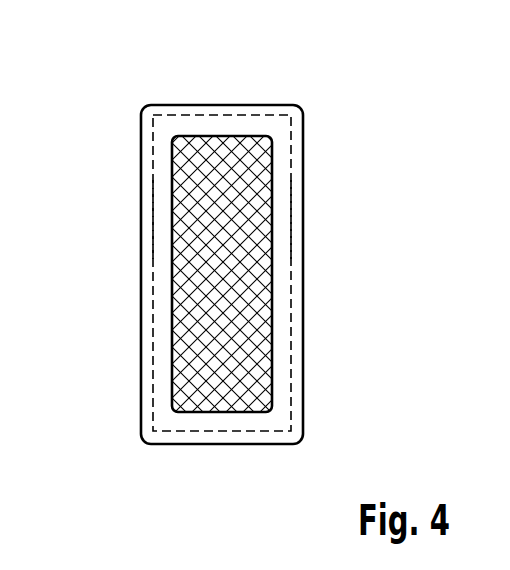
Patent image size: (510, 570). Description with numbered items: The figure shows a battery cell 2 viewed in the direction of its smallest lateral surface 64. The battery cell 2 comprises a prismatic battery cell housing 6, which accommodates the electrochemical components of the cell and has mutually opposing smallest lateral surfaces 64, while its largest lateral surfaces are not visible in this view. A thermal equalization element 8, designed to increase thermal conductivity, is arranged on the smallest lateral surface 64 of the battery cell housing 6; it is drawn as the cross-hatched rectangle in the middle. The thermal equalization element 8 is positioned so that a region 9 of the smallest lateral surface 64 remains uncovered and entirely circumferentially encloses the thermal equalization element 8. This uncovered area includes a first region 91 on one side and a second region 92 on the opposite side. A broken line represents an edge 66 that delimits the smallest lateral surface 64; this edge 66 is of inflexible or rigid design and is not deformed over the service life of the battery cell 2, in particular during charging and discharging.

The battery cell 2 is at (110, 85).
The battery cell housing 6 is at (150, 139).
The thermal equalization element 8 is at (198, 265).
The region 9 is at (167, 112).
The smallest lateral surface 64 is at (222, 131).
The edge 66 is at (258, 116).
The first region 91 is at (165, 217).
The second region 92 is at (278, 216).